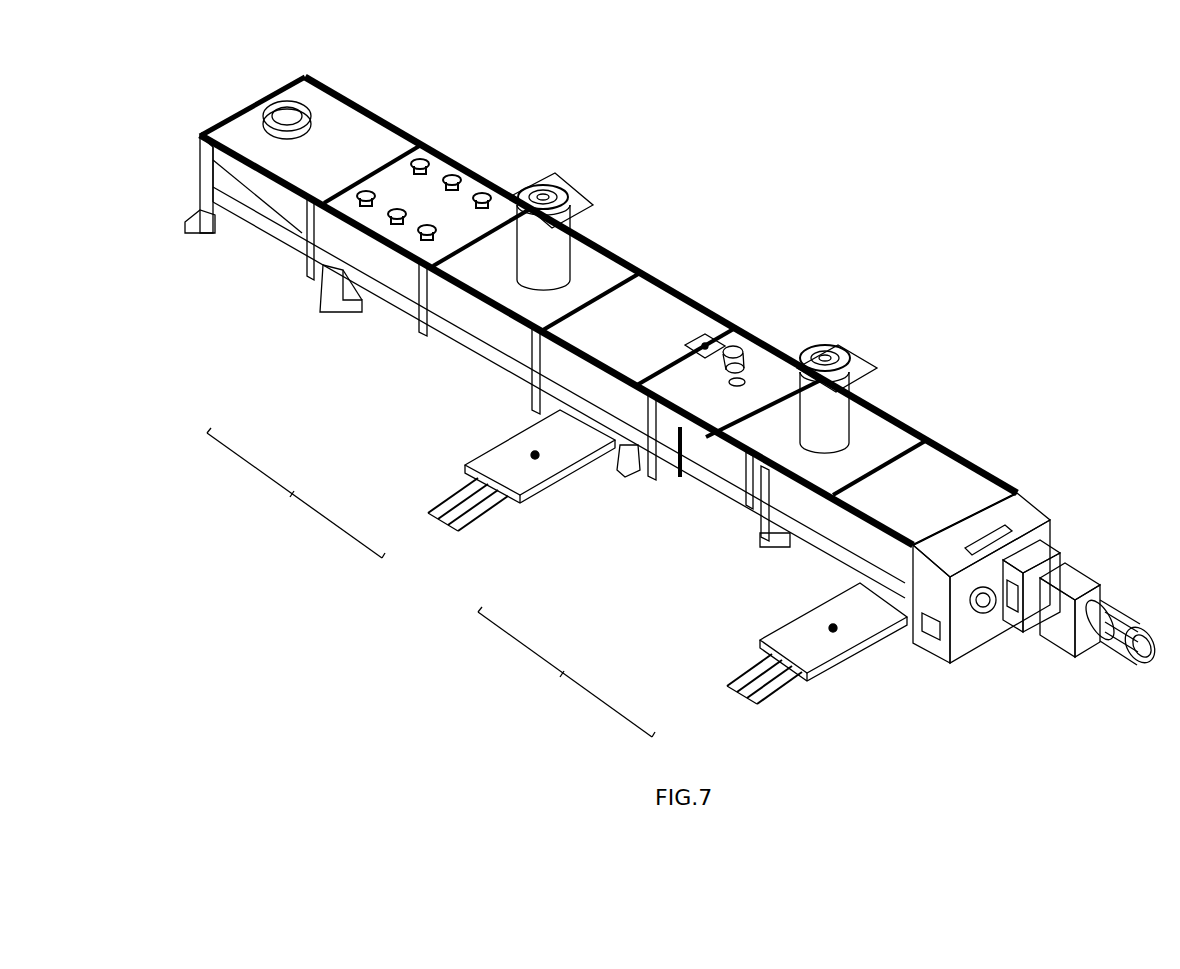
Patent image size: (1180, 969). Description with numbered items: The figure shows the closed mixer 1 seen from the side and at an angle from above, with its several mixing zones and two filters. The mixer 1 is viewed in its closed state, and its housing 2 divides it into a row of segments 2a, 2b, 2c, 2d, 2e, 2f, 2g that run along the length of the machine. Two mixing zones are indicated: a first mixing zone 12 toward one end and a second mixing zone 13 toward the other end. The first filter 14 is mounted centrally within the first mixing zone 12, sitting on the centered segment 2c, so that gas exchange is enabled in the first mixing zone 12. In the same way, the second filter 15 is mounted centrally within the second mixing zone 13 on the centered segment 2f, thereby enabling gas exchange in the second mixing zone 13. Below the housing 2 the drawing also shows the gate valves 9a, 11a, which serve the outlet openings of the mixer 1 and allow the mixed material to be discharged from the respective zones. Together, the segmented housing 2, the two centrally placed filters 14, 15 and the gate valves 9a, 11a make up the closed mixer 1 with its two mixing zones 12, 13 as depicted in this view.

The mixer 1 is at (778, 187).
The housing 2 is at (327, 88).
The segment 2a is at (352, 132).
The segment 2b is at (467, 190).
The centered segment 2c is at (592, 265).
The segment 2d is at (663, 308).
The segment 2e is at (767, 368).
The centered segment 2f is at (877, 433).
The segment 2g is at (950, 480).
The gate valve 9a is at (503, 462).
The gate valve 11a is at (798, 634).
The first mixing zone 12 is at (296, 493).
The second mixing zone 13 is at (566, 672).
The first filter 14 is at (560, 182).
The second filter 15 is at (845, 352).